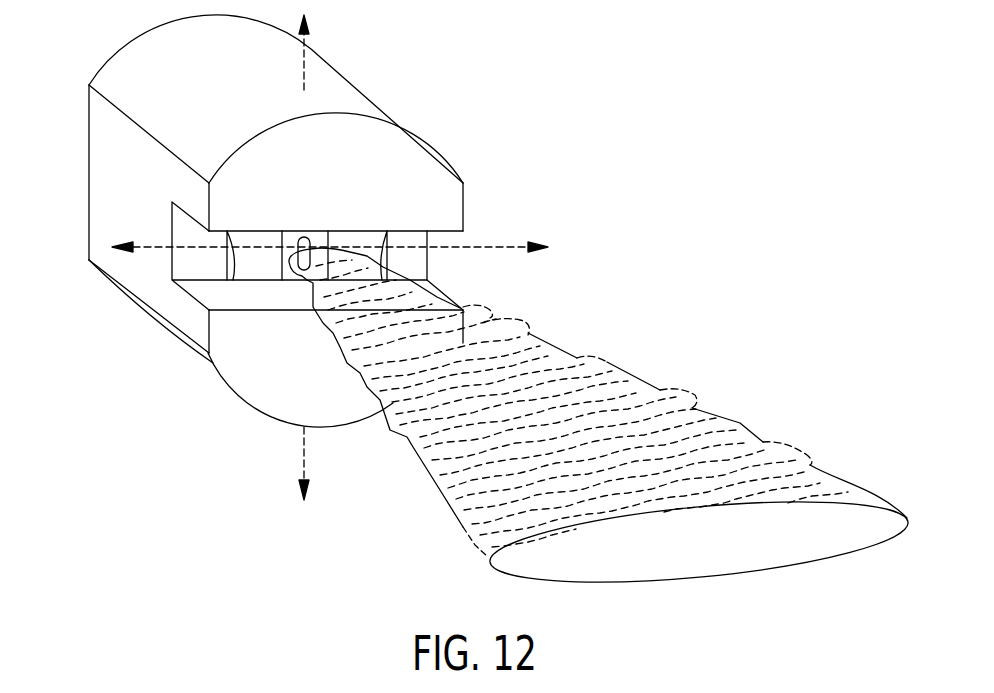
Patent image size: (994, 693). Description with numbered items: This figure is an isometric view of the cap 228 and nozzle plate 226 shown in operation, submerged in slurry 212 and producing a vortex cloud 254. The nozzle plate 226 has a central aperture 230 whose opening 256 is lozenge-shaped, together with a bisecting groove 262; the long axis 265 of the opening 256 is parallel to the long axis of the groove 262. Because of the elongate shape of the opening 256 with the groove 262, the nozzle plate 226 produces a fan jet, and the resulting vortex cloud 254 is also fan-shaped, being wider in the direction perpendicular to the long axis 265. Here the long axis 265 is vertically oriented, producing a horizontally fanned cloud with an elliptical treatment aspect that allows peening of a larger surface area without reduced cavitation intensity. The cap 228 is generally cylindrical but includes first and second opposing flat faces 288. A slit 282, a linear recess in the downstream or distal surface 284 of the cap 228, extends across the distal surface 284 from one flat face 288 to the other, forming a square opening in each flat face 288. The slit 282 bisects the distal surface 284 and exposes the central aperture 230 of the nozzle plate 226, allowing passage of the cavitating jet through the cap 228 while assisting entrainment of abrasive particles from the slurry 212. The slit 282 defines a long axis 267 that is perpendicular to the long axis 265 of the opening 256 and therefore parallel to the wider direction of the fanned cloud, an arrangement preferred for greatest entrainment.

The slurry 212 is at (598, 314).
The nozzle plate 226 is at (375, 242).
The cap 228 is at (117, 72).
The central aperture 230 is at (310, 237).
The vortex cloud 254 is at (717, 400).
The opening 256 is at (300, 237).
The bisecting groove 262 is at (295, 272).
The long axis of opening 265 is at (313, 47).
The long axis of slit 267 is at (511, 243).
The slit 282 is at (206, 296).
The distal surface 284 is at (369, 123).
The flat faces 288 is at (113, 173).